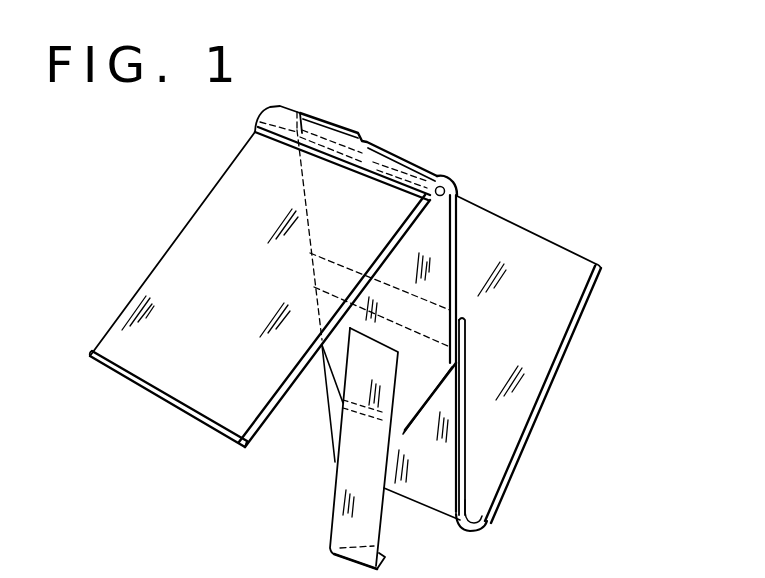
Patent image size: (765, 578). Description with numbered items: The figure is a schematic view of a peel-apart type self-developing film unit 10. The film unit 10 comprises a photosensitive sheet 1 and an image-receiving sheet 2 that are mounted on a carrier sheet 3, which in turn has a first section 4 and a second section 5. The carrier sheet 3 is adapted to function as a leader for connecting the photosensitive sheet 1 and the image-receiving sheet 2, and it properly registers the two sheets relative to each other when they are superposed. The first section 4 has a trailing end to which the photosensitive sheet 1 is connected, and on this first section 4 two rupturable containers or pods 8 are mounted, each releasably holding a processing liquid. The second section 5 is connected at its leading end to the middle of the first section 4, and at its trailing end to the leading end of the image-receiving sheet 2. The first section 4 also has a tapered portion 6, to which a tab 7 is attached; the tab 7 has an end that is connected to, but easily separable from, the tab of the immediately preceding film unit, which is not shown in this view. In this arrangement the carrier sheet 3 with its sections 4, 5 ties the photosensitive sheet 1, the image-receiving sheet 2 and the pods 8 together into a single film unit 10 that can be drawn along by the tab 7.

The photosensitive sheet 1 is at (160, 285).
The image-receiving sheet 2 is at (570, 290).
The carrier sheet 3 is at (319, 401).
The first section 4 is at (443, 233).
The second section 5 is at (437, 490).
The tapered portion 6 is at (425, 407).
The tab 7 is at (340, 503).
The rupturable containers or pods 8 is at (403, 153).
The self-developing film unit 10 is at (446, 168).